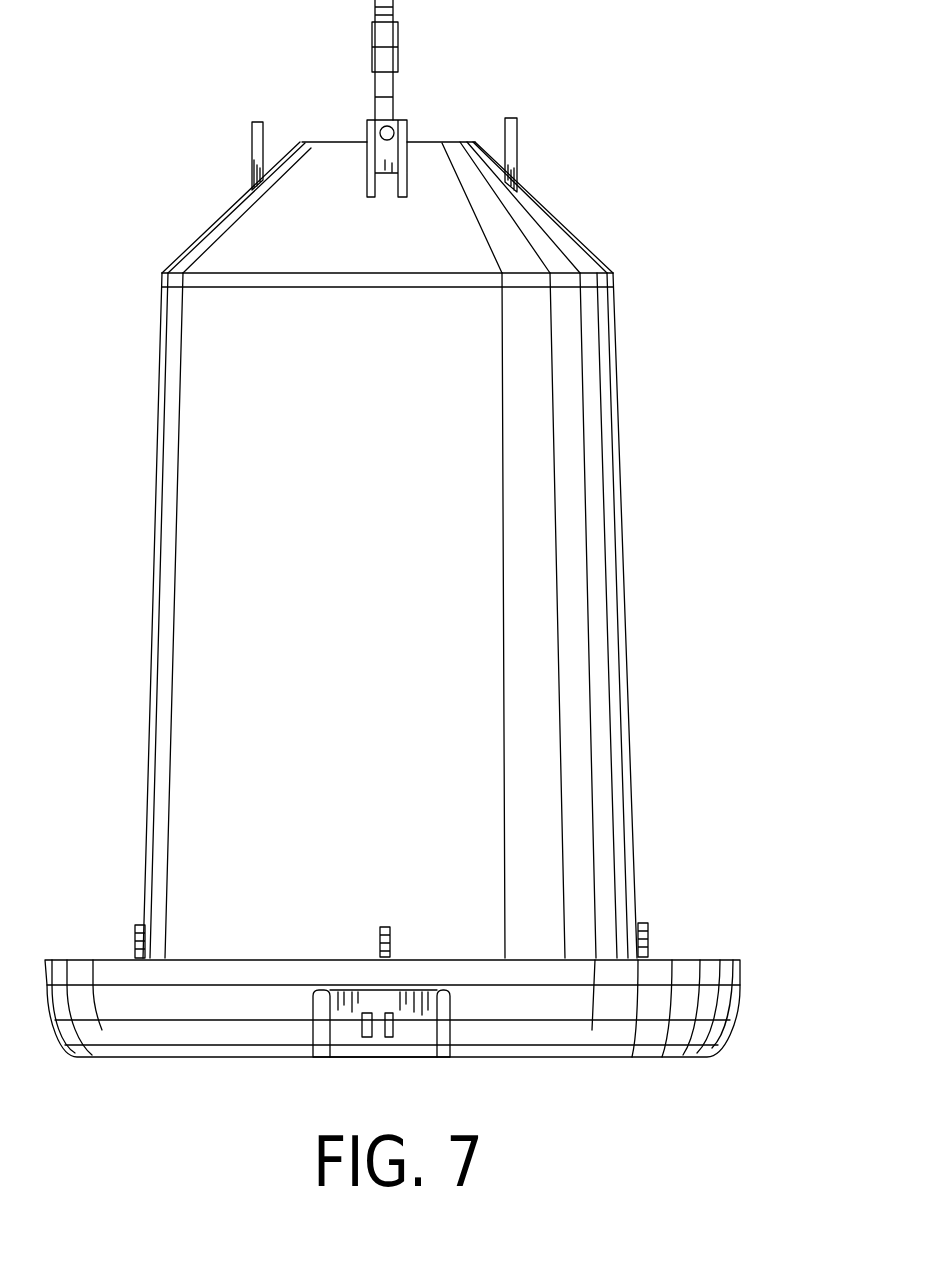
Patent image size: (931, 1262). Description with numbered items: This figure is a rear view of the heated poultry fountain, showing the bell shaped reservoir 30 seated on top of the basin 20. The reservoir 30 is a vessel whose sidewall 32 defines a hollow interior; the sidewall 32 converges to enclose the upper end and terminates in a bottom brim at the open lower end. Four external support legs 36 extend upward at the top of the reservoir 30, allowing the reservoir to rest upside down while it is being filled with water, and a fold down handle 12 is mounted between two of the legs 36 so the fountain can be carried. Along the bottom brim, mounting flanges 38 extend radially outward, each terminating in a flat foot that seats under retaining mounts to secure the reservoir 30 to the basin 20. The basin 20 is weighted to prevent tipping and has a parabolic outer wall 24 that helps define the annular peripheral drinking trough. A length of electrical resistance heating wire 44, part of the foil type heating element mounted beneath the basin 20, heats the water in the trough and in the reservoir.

The fold down handle 12 is at (395, 85).
The basin 20 is at (433, 946).
The outer wall 24 is at (723, 1003).
The reservoir 30 is at (407, 550).
The sidewall 32 is at (212, 492).
The support legs 36 is at (252, 140).
The mounting flanges 38 is at (137, 937).
The electrical resistance heating wire 44 is at (357, 1040).